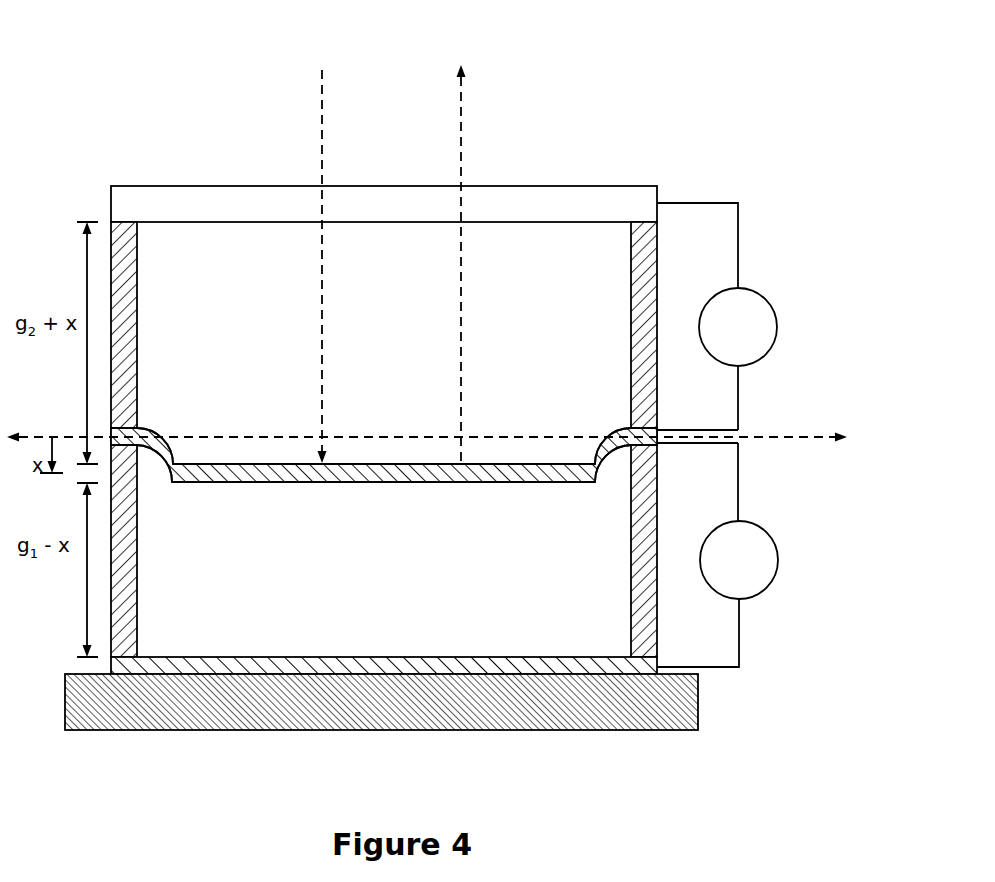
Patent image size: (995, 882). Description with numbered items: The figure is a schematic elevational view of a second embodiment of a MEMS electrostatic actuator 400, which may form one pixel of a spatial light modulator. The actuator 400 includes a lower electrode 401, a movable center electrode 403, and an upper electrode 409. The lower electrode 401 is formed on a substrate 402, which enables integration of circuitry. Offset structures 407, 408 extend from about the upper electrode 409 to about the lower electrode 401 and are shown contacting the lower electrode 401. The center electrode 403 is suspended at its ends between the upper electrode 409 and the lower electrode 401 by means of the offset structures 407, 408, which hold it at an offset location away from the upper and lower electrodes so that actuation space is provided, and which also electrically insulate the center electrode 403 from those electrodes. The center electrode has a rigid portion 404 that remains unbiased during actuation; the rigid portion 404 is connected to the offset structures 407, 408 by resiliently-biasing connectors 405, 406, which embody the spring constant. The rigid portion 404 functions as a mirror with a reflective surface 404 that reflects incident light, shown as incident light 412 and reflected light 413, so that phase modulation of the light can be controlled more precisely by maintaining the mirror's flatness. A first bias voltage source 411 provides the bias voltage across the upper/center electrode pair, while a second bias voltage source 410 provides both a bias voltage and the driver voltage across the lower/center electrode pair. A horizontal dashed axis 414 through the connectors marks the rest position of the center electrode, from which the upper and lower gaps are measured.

The MEMS electrostatic actuator 400 is at (178, 54).
The lower electrode 401 is at (378, 657).
The substrate 402 is at (588, 731).
The movable center electrode 403 is at (273, 484).
The rigid portion 404 is at (294, 451).
The resiliently-biasing connector 405 is at (149, 428).
The resiliently-biasing connector 406 is at (620, 428).
The offset structure 407 is at (137, 563).
The offset structure 408 is at (632, 532).
The upper electrode 409 is at (620, 186).
The second bias voltage source 410 is at (770, 585).
The first bias voltage source 411 is at (775, 338).
The incident light 412 is at (322, 125).
The reflected light 413 is at (461, 123).
The membrane rest position axis 414 is at (780, 437).